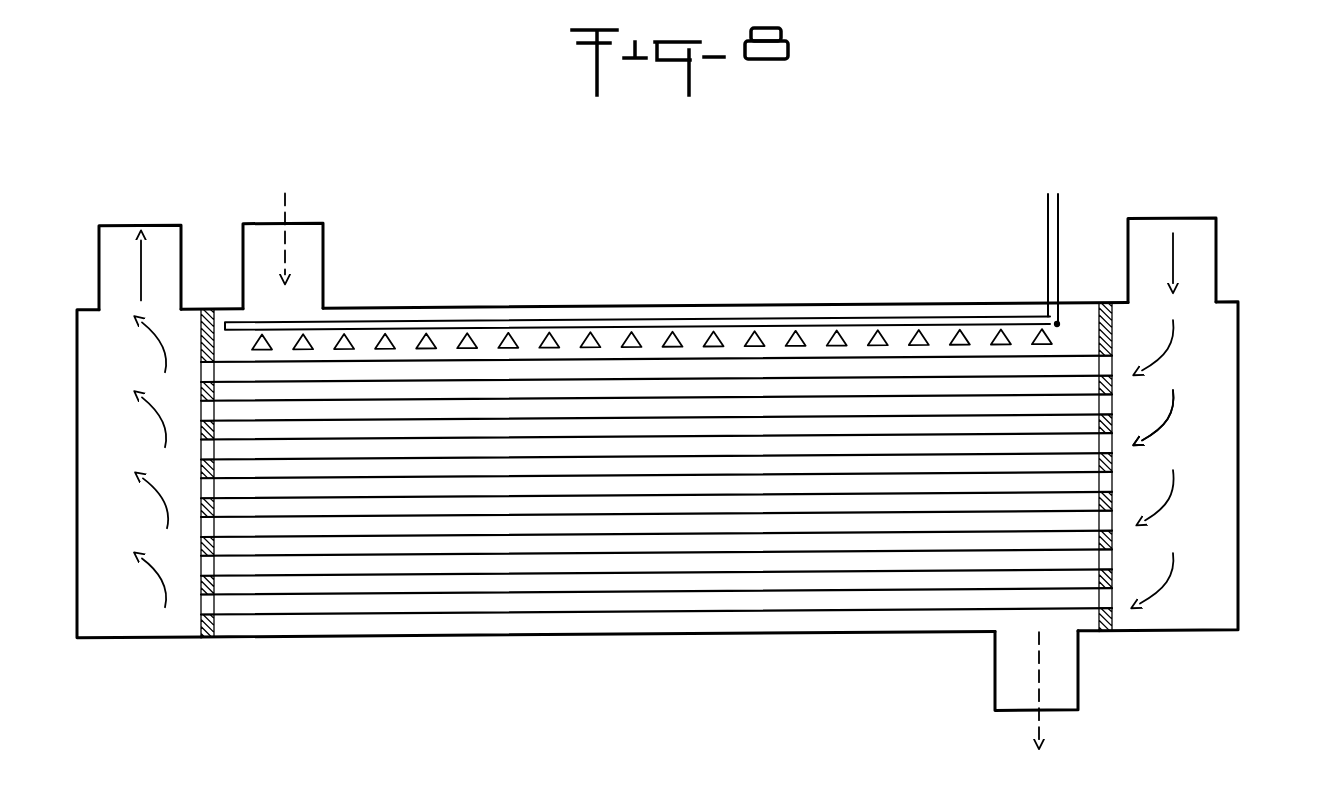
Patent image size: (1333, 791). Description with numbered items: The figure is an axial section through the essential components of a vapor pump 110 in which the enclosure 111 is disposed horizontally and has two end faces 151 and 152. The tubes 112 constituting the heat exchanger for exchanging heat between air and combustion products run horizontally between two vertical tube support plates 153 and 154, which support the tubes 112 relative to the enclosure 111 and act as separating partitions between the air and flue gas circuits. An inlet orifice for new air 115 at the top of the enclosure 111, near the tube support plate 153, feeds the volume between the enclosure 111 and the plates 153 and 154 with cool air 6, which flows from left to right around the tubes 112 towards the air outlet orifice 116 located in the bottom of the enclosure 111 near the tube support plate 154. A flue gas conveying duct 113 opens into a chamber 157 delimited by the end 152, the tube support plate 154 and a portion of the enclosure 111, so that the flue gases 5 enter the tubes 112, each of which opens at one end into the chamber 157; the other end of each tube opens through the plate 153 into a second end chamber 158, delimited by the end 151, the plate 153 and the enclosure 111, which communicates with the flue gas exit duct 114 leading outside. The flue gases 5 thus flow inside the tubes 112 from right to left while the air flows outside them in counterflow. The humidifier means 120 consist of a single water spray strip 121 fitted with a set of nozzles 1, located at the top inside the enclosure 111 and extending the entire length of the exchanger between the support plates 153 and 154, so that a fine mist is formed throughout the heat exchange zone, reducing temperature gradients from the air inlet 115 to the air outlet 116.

The nozzles 1 is at (758, 337).
The flue gases 5 is at (1169, 425).
The cool air 6 is at (286, 213).
The vapor pump 110 is at (580, 303).
The enclosure 111 is at (805, 640).
The tubes 112 is at (468, 517).
The flue gas conveying duct 113 is at (1216, 245).
The flue gas exit duct 114 is at (98, 272).
The inlet orifice for new air 115 is at (323, 258).
The air outlet orifice 116 is at (995, 683).
The humidifier means 120 is at (856, 332).
The water spray strip 121 is at (1058, 209).
The end face of the enclosure 151 is at (77, 493).
The end face of the enclosure 152 is at (1238, 383).
The tube support plate 153 is at (205, 308).
The tube support plate 154 is at (1105, 309).
The chamber 157 is at (1208, 617).
The second end chamber 158 is at (123, 616).